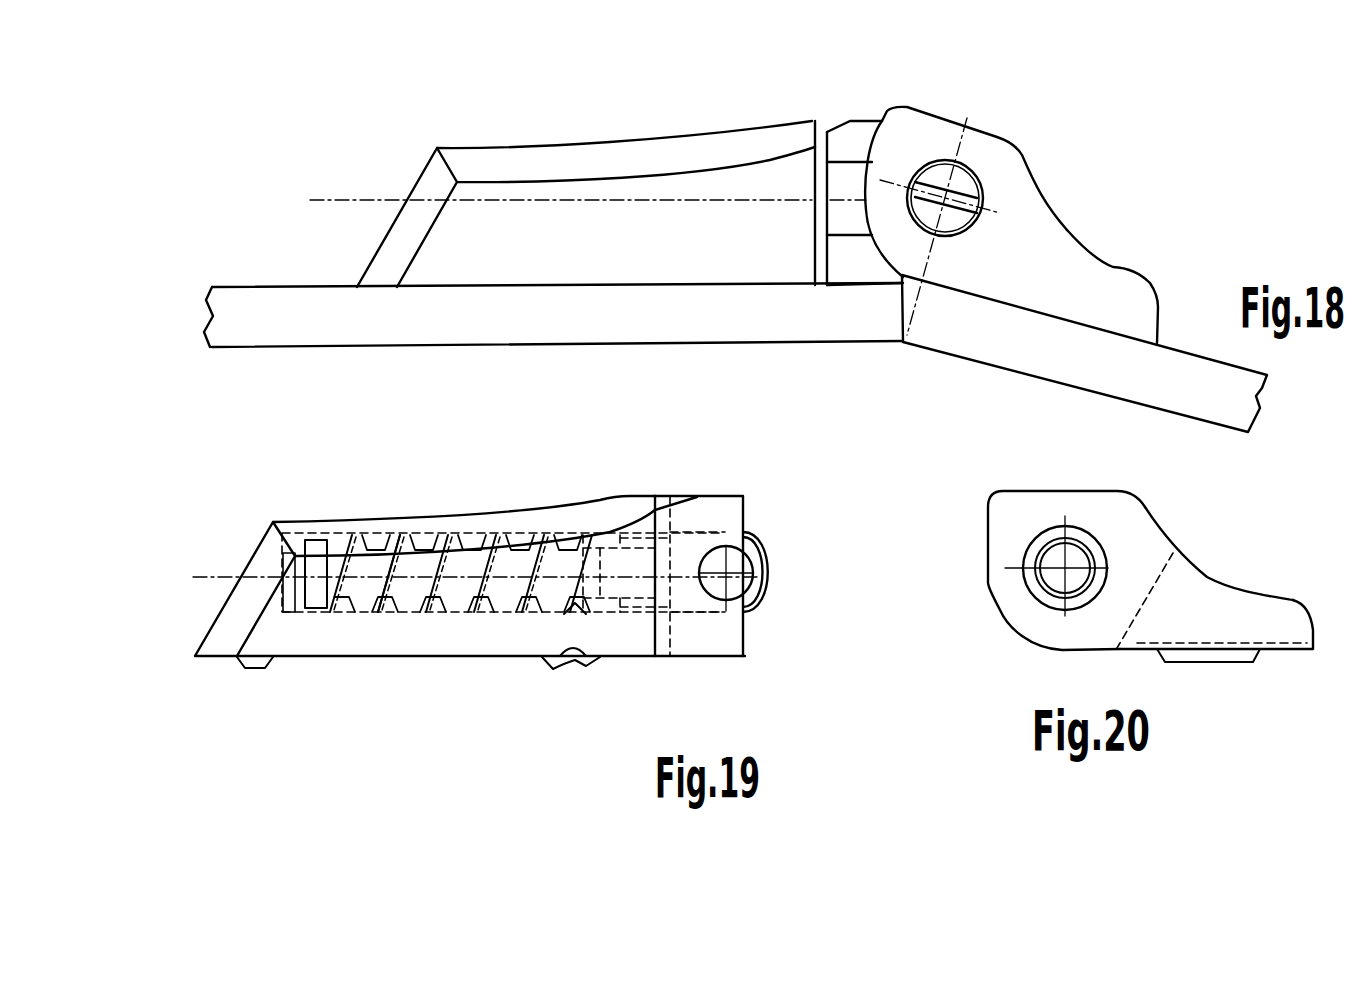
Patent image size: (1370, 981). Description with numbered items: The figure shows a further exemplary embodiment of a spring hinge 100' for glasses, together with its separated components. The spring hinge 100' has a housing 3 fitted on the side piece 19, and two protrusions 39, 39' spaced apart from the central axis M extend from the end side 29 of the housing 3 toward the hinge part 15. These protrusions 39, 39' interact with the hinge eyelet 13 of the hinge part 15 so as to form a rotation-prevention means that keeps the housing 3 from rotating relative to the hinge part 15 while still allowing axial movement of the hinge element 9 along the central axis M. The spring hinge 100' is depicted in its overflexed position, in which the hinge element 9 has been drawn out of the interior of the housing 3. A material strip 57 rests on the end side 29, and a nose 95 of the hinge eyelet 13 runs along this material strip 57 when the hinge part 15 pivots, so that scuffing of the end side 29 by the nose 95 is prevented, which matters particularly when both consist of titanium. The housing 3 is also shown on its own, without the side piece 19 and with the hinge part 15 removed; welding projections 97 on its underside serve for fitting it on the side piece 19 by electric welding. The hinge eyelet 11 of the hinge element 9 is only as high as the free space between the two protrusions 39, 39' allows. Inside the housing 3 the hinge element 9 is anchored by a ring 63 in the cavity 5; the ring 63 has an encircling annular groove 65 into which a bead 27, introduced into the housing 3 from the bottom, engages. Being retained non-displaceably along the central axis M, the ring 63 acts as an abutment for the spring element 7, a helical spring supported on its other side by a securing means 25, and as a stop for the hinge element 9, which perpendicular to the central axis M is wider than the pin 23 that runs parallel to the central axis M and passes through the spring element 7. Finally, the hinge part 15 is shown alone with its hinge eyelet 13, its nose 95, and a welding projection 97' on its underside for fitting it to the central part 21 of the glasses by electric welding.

In FIG. 18, the housing 3 is at (427, 190).
In FIG. 19, the housing 3 is at (264, 561).
In FIG. 19, the cavity 5 is at (301, 542).
In FIG. 19, the spring element 7 is at (402, 528).
In FIG. 18, the hinge element 9 is at (845, 193).
In FIG. 19, the hinge element 9 is at (685, 587).
In FIG. 19, the hinge eyelet 11 is at (776, 562).
In FIG. 18, the hinge eyelet 13 is at (1002, 155).
In FIG. 20, the hinge eyelet 13 is at (1120, 520).
In FIG. 18, the hinge part 15 is at (1108, 287).
In FIG. 20, the hinge part 15 is at (1245, 580).
In FIG. 18, the side piece 19 is at (476, 340).
In FIG. 18, the central part 21 is at (1108, 372).
In FIG. 19, the pin 23 is at (367, 599).
In FIG. 19, the securing means 25 is at (315, 596).
In FIG. 19, the bead 27 is at (575, 607).
In FIG. 18, the end side 29 is at (812, 174).
In FIG. 19, the end side 29 is at (648, 628).
In FIG. 18, the protrusion 39 is at (855, 81).
In FIG. 19, the protrusion 39 is at (699, 512).
In FIG. 18, the protrusion 39' is at (859, 334).
In FIG. 19, the protrusion 39' is at (792, 649).
In FIG. 18, the material strip 57 is at (817, 250).
In FIG. 19, the material strip 57 is at (663, 642).
In FIG. 19, the ring 63 is at (549, 541).
In FIG. 19, the annular groove 65 is at (576, 539).
In FIG. 18, the nose 95 is at (900, 113).
In FIG. 20, the nose 95 is at (1003, 505).
In FIG. 19, the welding projections 97 is at (387, 726).
In FIG. 20, the welding projection 97' is at (1215, 692).
In FIG. 18, the spring hinge 100' is at (626, 78).
In FIG. 18, the central axis M is at (327, 202).
In FIG. 19, the central axis M is at (213, 580).